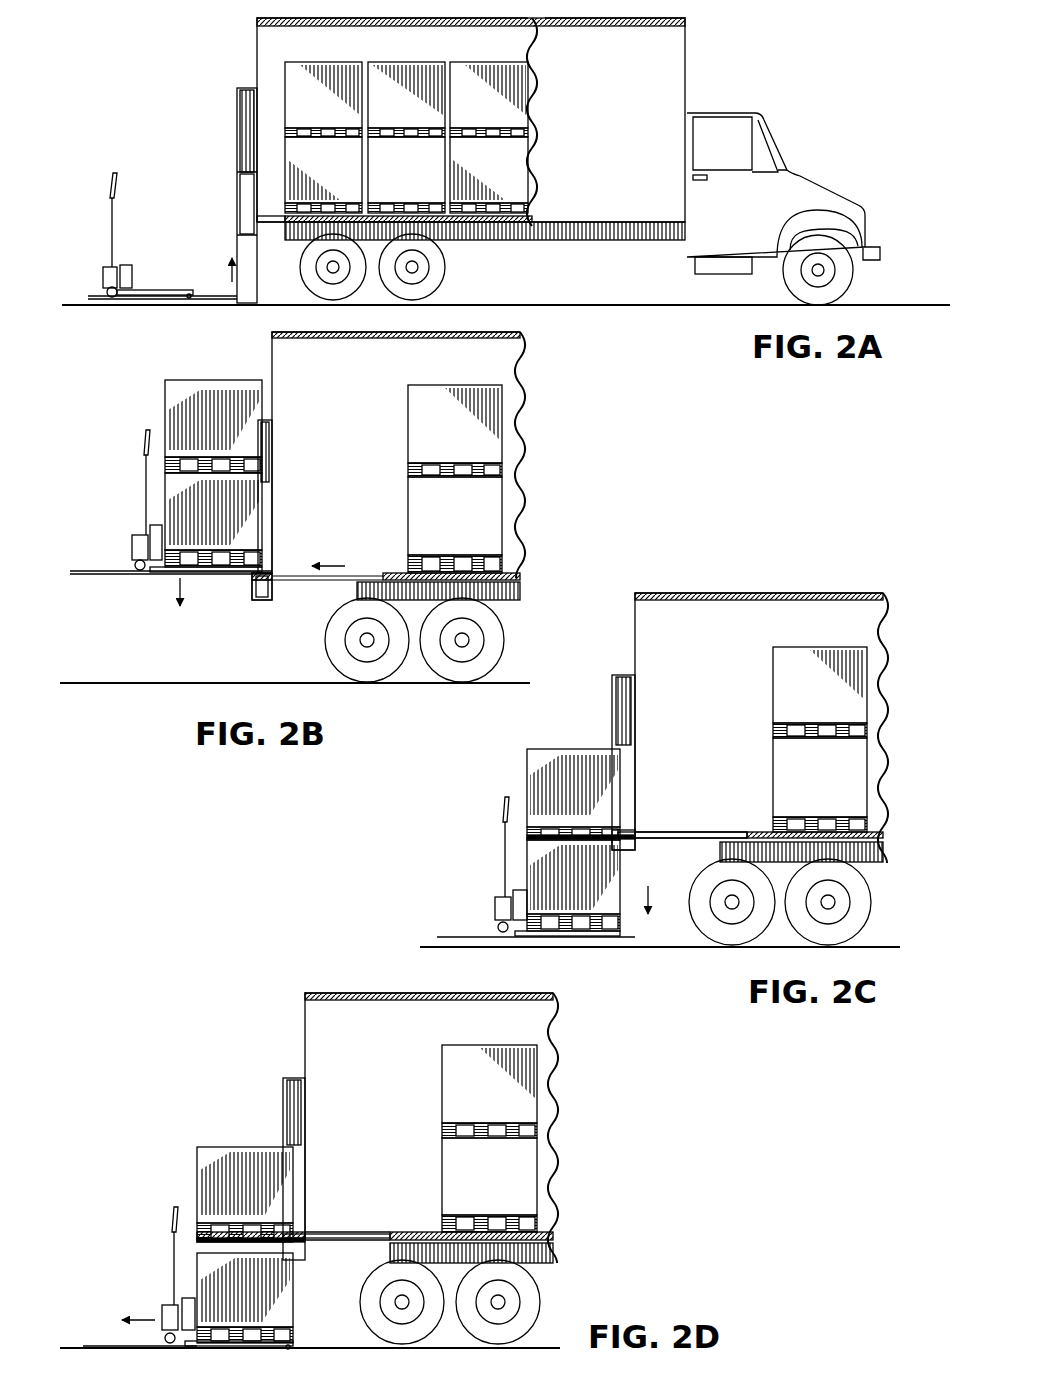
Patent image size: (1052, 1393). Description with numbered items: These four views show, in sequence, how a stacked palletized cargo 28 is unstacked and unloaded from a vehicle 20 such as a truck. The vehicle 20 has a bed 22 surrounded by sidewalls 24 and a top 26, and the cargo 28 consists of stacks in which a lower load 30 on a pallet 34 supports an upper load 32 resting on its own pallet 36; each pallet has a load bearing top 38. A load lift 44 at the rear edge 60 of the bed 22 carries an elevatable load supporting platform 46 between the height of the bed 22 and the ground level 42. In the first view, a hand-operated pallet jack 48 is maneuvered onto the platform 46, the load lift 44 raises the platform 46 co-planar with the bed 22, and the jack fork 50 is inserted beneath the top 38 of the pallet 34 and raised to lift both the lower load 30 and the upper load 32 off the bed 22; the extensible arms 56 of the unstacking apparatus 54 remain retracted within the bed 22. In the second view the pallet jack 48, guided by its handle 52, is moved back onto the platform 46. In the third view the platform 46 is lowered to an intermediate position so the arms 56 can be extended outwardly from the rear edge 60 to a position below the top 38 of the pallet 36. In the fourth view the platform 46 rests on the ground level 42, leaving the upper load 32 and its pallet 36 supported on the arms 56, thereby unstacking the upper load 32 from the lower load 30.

In FIG. 2A, the vehicle 20 is at (769, 68).
In FIG. 2B, the vehicle 20 is at (548, 408).
In FIG. 2C, the vehicle 20 is at (748, 588).
In FIG. 2D, the vehicle 20 is at (340, 990).
In FIG. 2A, the bed 22 is at (468, 194).
In FIG. 2B, the bed 22 is at (522, 566).
In FIG. 2C, the bed 22 is at (690, 830).
In FIG. 2D, the bed 22 is at (560, 1228).
In FIG. 2A, the sidewalls 24 is at (257, 34).
In FIG. 2B, the sidewalls 24 is at (343, 377).
In FIG. 2C, the sidewalls 24 is at (707, 644).
In FIG. 2D, the sidewalls 24 is at (373, 1052).
In FIG. 2A, the top 26 is at (532, 36).
In FIG. 2B, the top 26 is at (438, 338).
In FIG. 2C, the top 26 is at (774, 592).
In FIG. 2D, the top 26 is at (388, 992).
In FIG. 2A, the cargo 28 is at (364, 50).
In FIG. 2B, the cargo 28 is at (377, 426).
In FIG. 2C, the cargo 28 is at (660, 809).
In FIG. 2D, the cargo 28 is at (414, 1102).
In FIG. 2A, the lower load 30 is at (322, 170).
In FIG. 2B, the lower load 30 is at (217, 522).
In FIG. 2C, the lower load 30 is at (822, 782).
In FIG. 2D, the lower load 30 is at (492, 1182).
In FIG. 2A, the upper load 32 is at (316, 101).
In FIG. 2B, the upper load 32 is at (219, 416).
In FIG. 2C, the upper load 32 is at (815, 696).
In FIG. 2D, the upper load 32 is at (490, 1096).
In FIG. 2A, the pallet 34 is at (324, 204).
In FIG. 2B, the pallet 34 is at (264, 466).
In FIG. 2C, the pallet 34 is at (770, 826).
In FIG. 2D, the pallet 34 is at (444, 1214).
In FIG. 2A, the pallet 36 is at (308, 126).
In FIG. 2B, the pallet 36 is at (264, 552).
In FIG. 2C, the pallet 36 is at (772, 734).
In FIG. 2D, the pallet 36 is at (538, 1131).
In FIG. 2C, the load bearing top 38 is at (561, 825).
In FIG. 2D, the load bearing top 38 is at (304, 1224).
In FIG. 2A, the ground level 42 is at (548, 304).
In FIG. 2B, the ground level 42 is at (112, 678).
In FIG. 2C, the ground level 42 is at (426, 946).
In FIG. 2D, the ground level 42 is at (83, 1350).
In FIG. 2A, the load lift 44 is at (234, 100).
In FIG. 2B, the load lift 44 is at (252, 602).
In FIG. 2C, the load lift 44 is at (620, 672).
In FIG. 2D, the load lift 44 is at (280, 1078).
In FIG. 2A, the load supporting platform 46 is at (212, 297).
In FIG. 2B, the load supporting platform 46 is at (104, 574).
In FIG. 2C, the load supporting platform 46 is at (450, 934).
In FIG. 2D, the load supporting platform 46 is at (112, 1346).
In FIG. 2A, the pallet jack 48 is at (104, 242).
In FIG. 2B, the pallet jack 48 is at (134, 500).
In FIG. 2C, the pallet jack 48 is at (494, 860).
In FIG. 2D, the pallet jack 48 is at (166, 1273).
In FIG. 2A, the jack fork 50 is at (166, 290).
In FIG. 2B, the jack fork 50 is at (236, 572).
In FIG. 2C, the jack fork 50 is at (567, 933).
In FIG. 2D, the jack fork 50 is at (264, 1346).
In FIG. 2A, the handle 52 is at (112, 182).
In FIG. 2B, the handle 52 is at (142, 446).
In FIG. 2C, the handle 52 is at (502, 802).
In FIG. 2A, the unstacking apparatus 54 is at (268, 212).
In FIG. 2B, the unstacking apparatus 54 is at (358, 570).
In FIG. 2D, the unstacking apparatus 54 is at (366, 1228).
In FIG. 2A, the extensible arms 56 is at (282, 222).
In FIG. 2B, the extensible arms 56 is at (294, 580).
In FIG. 2C, the extensible arms 56 is at (620, 832).
In FIG. 2D, the extensible arms 56 is at (216, 1218).
In FIG. 2B, the rear edge 60 is at (270, 596).
In FIG. 2C, the rear edge 60 is at (637, 842).